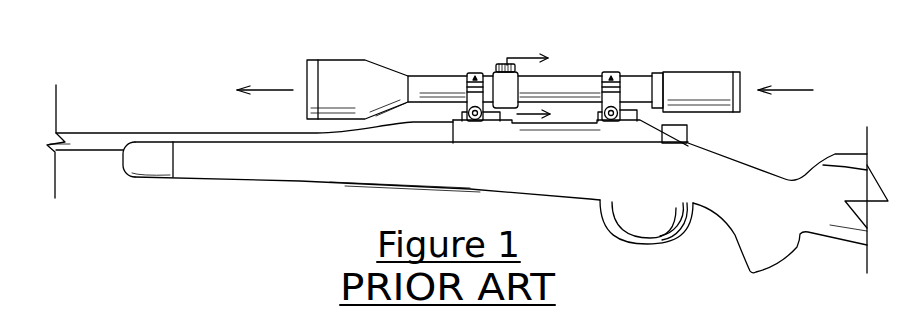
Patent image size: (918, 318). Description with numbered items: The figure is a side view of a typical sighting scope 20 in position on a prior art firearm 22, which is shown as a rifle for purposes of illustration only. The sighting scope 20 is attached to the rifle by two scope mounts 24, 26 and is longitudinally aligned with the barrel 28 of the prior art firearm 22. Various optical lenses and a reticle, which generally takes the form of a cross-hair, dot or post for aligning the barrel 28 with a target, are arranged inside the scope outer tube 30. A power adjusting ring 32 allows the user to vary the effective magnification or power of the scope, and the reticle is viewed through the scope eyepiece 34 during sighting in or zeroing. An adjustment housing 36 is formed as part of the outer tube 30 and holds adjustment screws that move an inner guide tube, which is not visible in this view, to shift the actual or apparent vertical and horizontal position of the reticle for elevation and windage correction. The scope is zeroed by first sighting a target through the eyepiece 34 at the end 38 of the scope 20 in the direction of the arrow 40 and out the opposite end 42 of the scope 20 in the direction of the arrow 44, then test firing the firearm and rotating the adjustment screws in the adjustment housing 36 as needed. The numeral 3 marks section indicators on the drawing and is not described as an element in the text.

The sighting scope 20 is at (536, 71).
The prior art firearm 22 is at (756, 163).
The scope mount 24 is at (467, 72).
The scope mount 26 is at (606, 72).
The barrel 28 is at (102, 140).
The scope outer tube 30 is at (583, 77).
The power adjusting ring 32 is at (658, 78).
The scope eyepiece 34 is at (693, 80).
The adjustment housing 36 is at (500, 78).
The end of the scope 38 is at (743, 87).
The arrow 40 is at (810, 88).
The opposite end of the scope 42 is at (307, 90).
The arrow 44 is at (281, 90).
The section view indicator for FIG. 3 is at (536, 86).